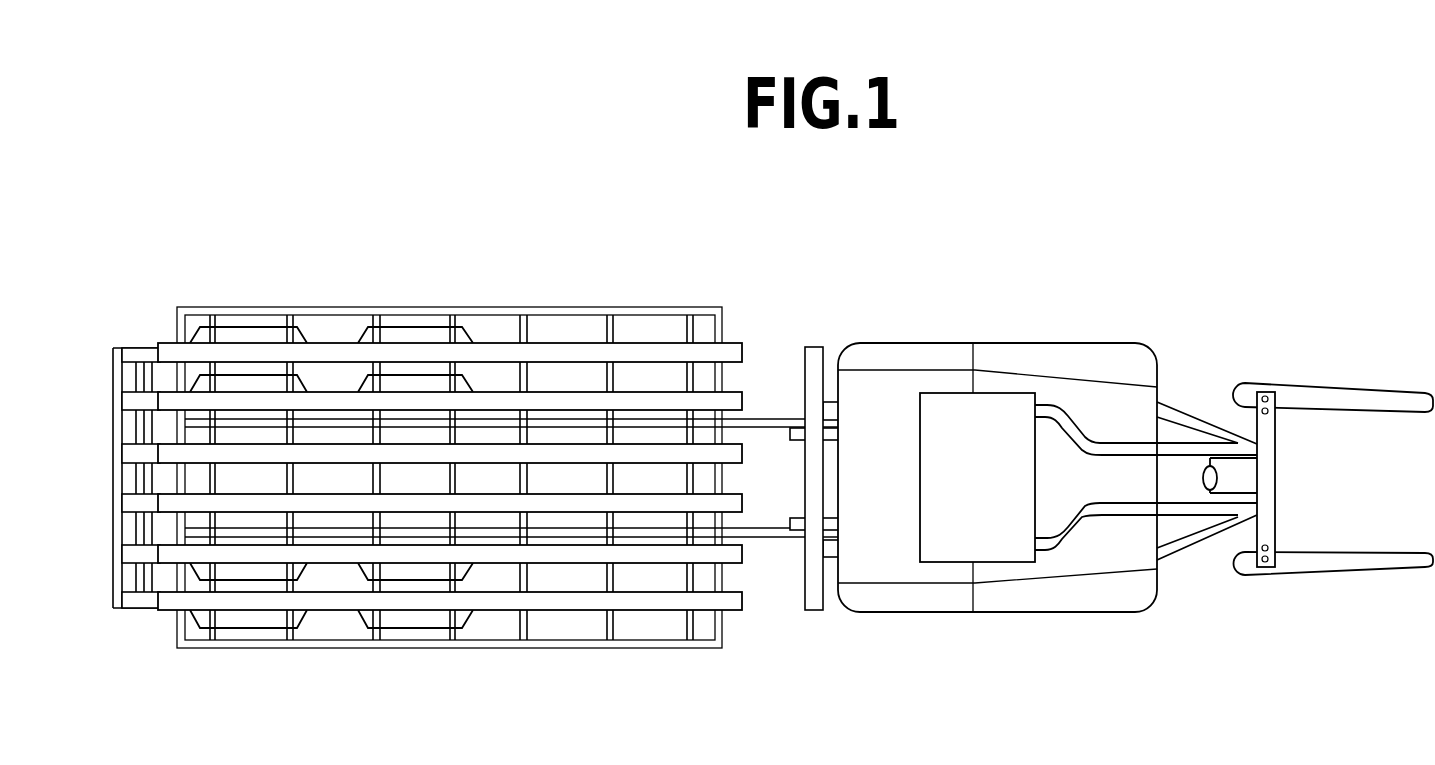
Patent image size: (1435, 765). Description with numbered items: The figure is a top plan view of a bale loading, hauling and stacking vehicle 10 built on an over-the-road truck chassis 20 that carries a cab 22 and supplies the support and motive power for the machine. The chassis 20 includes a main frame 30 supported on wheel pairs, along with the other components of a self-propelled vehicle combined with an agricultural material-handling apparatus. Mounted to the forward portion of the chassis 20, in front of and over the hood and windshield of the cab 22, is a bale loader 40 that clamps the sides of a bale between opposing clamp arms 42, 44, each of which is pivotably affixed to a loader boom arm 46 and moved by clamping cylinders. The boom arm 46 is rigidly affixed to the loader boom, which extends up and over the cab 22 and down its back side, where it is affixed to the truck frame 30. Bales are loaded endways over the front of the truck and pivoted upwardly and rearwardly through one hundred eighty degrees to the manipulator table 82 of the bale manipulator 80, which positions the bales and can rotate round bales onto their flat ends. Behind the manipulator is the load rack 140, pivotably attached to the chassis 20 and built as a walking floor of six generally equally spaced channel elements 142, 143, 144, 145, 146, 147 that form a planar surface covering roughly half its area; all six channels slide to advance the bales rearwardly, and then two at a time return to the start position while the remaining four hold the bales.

The loader, hauler and stacker vehicle 10 is at (1090, 457).
The truck chassis 20 is at (834, 517).
The cab 22 is at (1106, 595).
The main frame 30 is at (762, 533).
The bale loader 40 is at (1318, 486).
The clamp arm 42 is at (1370, 400).
The clamp arm 44 is at (1357, 560).
The loader boom arm 46 is at (1268, 472).
The bale manipulator 80 is at (900, 337).
The manipulator table 82 is at (950, 537).
The load rack 140 is at (516, 468).
The channel element 142 is at (627, 353).
The channel element 143 is at (725, 403).
The channel element 144 is at (730, 460).
The channel element 145 is at (717, 503).
The channel element 146 is at (592, 555).
The channel element 147 is at (637, 600).